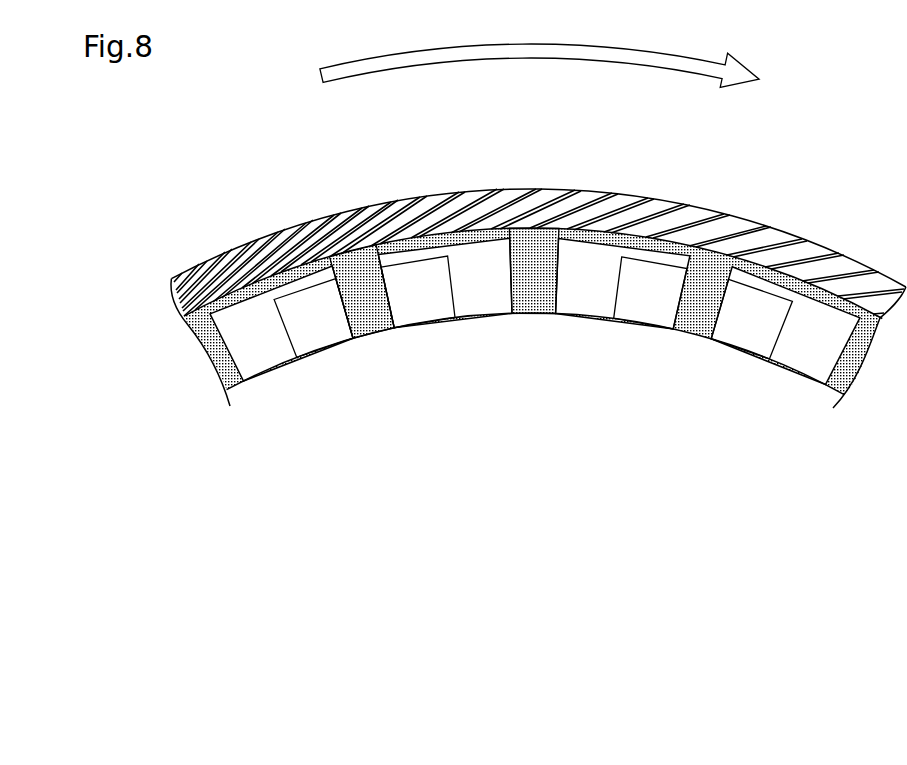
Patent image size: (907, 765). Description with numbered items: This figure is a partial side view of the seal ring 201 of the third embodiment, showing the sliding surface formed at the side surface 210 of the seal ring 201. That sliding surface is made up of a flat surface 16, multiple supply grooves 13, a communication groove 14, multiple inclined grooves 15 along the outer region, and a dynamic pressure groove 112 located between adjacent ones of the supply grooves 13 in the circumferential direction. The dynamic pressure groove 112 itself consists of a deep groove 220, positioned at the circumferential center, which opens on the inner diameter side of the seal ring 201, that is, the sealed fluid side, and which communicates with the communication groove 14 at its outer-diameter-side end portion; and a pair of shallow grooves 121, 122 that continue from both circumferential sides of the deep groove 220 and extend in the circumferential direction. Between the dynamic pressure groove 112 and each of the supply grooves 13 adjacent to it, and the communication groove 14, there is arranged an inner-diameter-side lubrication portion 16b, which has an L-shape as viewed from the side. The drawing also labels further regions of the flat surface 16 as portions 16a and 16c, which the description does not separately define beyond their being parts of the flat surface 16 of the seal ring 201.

The seal ring 201 is at (288, 183).
The inclined grooves 15 is at (470, 192).
The flat surface 16 is at (533, 288).
The outer bridge portion of rotor core 16a is at (690, 237).
The inner-diameter-side lubrication portion 16b is at (587, 292).
The outer peripheral portion of rotor core 16c is at (597, 192).
The communication groove 14 is at (477, 241).
The supply grooves 13 is at (558, 268).
The side surface 210 is at (262, 353).
The dynamic pressure groove 112 is at (335, 379).
The shallow groove 122 is at (333, 350).
The deep groove 220 is at (387, 338).
The shallow groove 121 is at (437, 322).